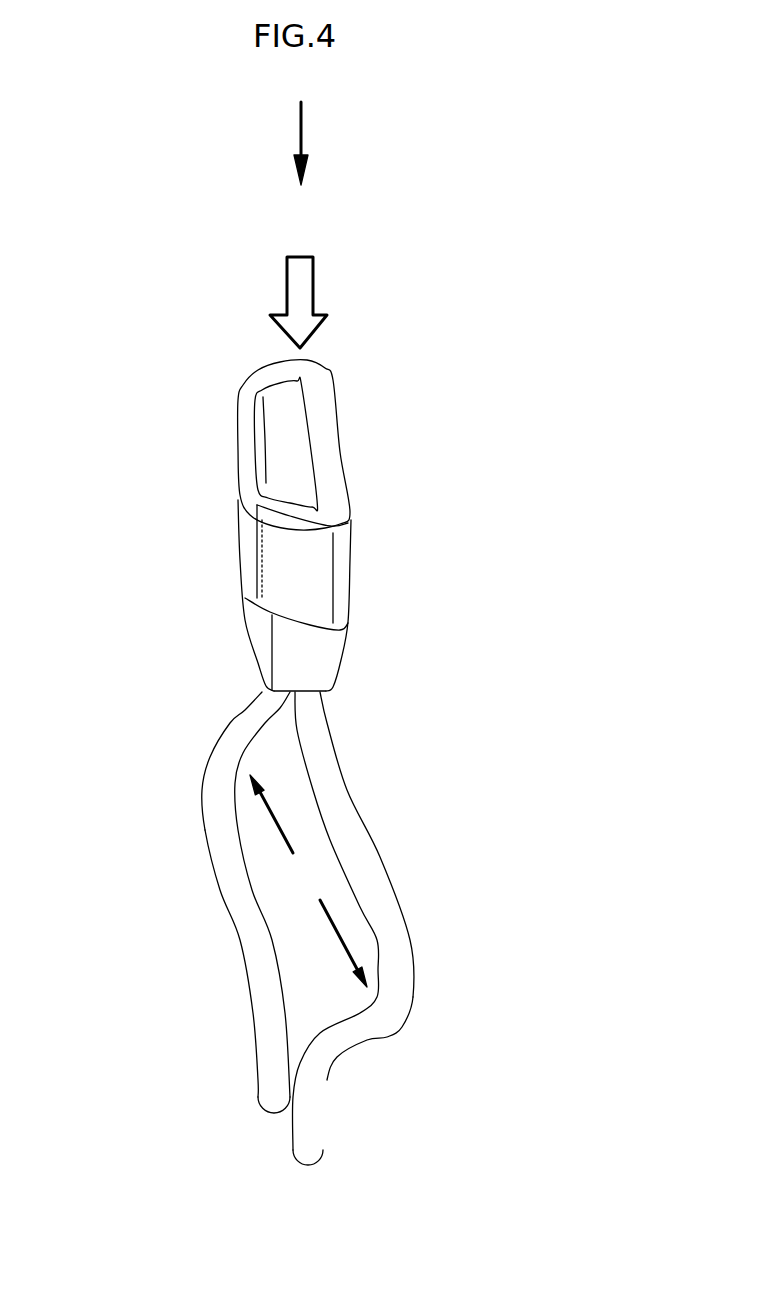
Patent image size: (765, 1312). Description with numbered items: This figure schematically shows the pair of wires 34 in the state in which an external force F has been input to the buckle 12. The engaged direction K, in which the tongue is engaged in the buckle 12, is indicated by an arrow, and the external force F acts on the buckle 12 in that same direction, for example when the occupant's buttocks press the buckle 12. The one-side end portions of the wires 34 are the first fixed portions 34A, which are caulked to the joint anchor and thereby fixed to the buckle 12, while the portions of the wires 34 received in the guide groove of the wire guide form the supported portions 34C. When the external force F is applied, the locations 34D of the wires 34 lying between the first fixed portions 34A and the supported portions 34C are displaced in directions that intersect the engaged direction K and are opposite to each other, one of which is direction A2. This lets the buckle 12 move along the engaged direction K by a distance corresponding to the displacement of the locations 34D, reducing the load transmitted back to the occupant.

The buckle 12 is at (337, 418).
The wire 34 is at (310, 928).
The first fixed portion 34A is at (256, 627).
The supported portion 34C is at (268, 1082).
The location 34D is at (202, 790).
The engaged direction K is at (305, 128).
The external force F is at (313, 287).
The direction A2 is at (282, 830).